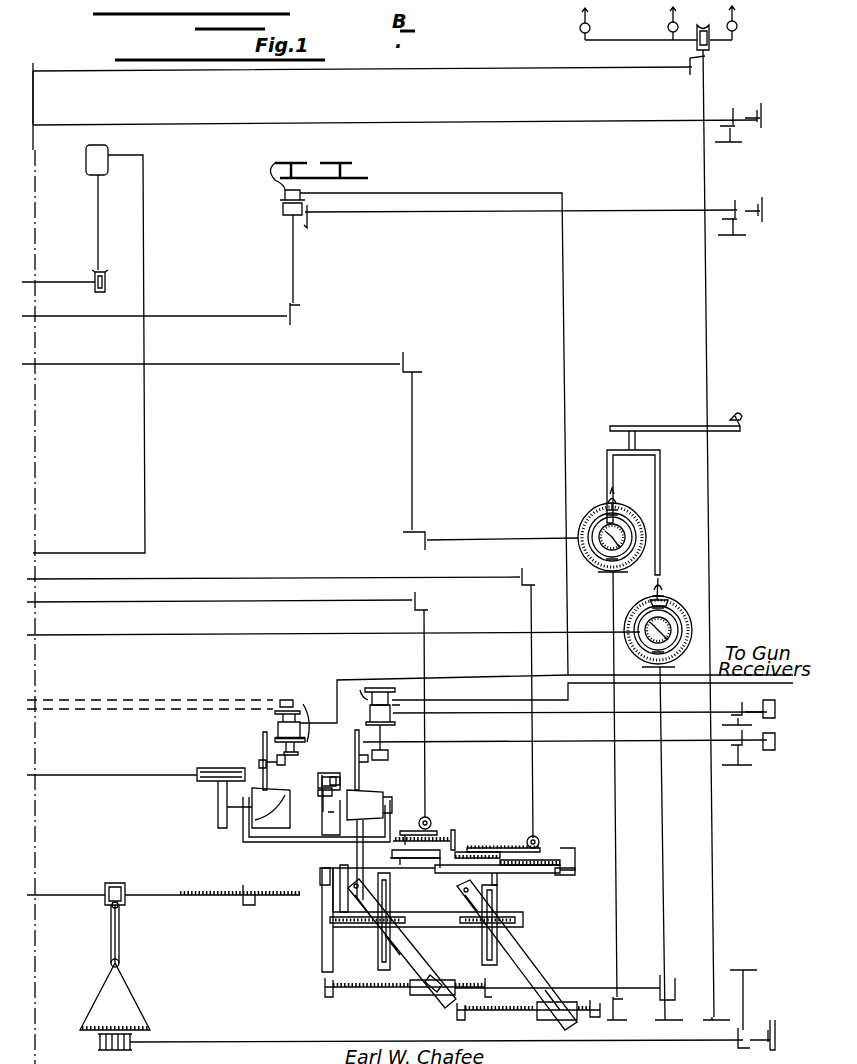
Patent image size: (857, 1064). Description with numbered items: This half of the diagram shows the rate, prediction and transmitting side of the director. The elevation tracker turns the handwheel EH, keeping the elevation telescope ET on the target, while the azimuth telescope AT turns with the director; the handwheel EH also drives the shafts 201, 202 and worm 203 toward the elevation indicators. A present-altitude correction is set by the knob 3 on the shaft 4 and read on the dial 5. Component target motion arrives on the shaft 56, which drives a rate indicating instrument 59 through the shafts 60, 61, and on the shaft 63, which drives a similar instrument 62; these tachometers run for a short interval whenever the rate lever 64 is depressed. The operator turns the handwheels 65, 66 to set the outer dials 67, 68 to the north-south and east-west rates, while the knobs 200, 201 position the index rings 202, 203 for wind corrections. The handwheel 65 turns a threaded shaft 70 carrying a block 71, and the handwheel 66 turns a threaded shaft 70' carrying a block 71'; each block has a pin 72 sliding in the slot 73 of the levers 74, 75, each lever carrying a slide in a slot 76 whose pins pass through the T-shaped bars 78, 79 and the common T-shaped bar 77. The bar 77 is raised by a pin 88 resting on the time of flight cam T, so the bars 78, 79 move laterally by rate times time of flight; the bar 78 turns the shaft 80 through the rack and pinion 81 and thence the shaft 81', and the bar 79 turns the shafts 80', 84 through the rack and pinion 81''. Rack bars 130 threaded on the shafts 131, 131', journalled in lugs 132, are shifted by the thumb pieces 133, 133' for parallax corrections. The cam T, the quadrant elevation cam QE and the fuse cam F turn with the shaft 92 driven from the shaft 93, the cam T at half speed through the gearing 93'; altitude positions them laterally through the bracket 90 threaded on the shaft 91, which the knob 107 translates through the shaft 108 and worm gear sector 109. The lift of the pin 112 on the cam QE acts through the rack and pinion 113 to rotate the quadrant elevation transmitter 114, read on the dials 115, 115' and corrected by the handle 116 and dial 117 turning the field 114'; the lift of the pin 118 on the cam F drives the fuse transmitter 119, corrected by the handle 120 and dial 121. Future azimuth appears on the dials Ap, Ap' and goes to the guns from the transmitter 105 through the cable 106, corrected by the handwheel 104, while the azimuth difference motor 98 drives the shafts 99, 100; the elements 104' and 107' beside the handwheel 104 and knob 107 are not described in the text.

The knob 3 is at (764, 112).
The shaft 4 is at (563, 124).
The dial 5 is at (742, 143).
The shaft 56 is at (224, 367).
The rate indicating instrument 59 is at (602, 520).
The shaft 60 is at (411, 437).
The shaft 61 is at (493, 537).
The rate indicating instrument 62 is at (645, 616).
The shaft 63 is at (137, 633).
The rate lever 64 is at (737, 413).
The handwheel 65 is at (622, 1016).
The handwheel 66 is at (668, 1016).
The outer dial 67 is at (626, 512).
The outer dial 68 is at (674, 656).
The threaded shaft 70 is at (534, 1019).
The threaded shaft 70' is at (565, 977).
The block 71 is at (524, 1028).
The block 71' is at (408, 1004).
The pin 72 is at (428, 996).
The slot 73 is at (444, 986).
The lever 74 is at (530, 970).
The lever 75 is at (412, 940).
The slot 76 is at (380, 934).
The common T-shaped bar 77 is at (322, 930).
The T-shaped bar 78 is at (390, 878).
The T-shaped bar 79 is at (570, 870).
The shaft 80 is at (443, 761).
The shaft 80' is at (553, 761).
The rack and pinion 81 is at (460, 822).
The shaft 81' is at (227, 704).
The rack and pinion connection 81'' is at (561, 812).
The shaft 84 is at (334, 577).
The pin 88 is at (337, 888).
The supporting bracket 90 is at (262, 848).
The shaft 91 is at (173, 894).
The shaft 92 is at (317, 806).
The shaft 93 is at (139, 785).
The gearing 93' is at (333, 782).
The azimuth difference motor 98 is at (86, 157).
The shaft 99 is at (100, 226).
The shaft 100 is at (49, 278).
The handwheel 104 is at (543, 194).
The switch 104' is at (741, 246).
The future azimuth transmitter 105 is at (285, 217).
The cable 106 is at (567, 303).
The knob 107 is at (775, 1025).
The switch 107' is at (762, 995).
The shaft 108 is at (250, 1040).
The worm gear sector 109 is at (134, 1000).
The pin 112 is at (263, 731).
The rack and pinion 113 is at (258, 762).
The quadrant elevation transmitter 114 is at (315, 712).
The rotatably mounted field 114' is at (312, 735).
The coarse quadrant elevation dial 115 is at (274, 713).
The fine quadrant elevation dial 115' is at (397, 676).
The handle 116 is at (772, 752).
The dial 117 is at (733, 772).
The pin 118 is at (356, 730).
The fuse transmitter 119 is at (386, 730).
The handle 120 is at (771, 709).
The dial 121 is at (720, 727).
The rack bar 130 is at (519, 824).
The threaded shaft 131 is at (508, 884).
The threaded shaft 131' is at (400, 877).
The lug 132 is at (462, 850).
The thumb piece 133 is at (589, 841).
The thumb piece 133' is at (503, 817).
The setting knob 200 is at (614, 490).
The setting knob 201 is at (710, 320).
The index ring 202 is at (458, 70).
The index ring 203 is at (672, 608).
The elevation telescope ET is at (601, 24).
The azimuth telescope AT is at (748, 23).
The coarse future azimuth dial Ap is at (320, 165).
The fine future azimuth dial Ap' is at (340, 159).
The quadrant elevation cam QE is at (268, 807).
The fuse cam F is at (368, 796).
The time of flight cam T is at (370, 860).
The elevation handwheel EH is at (725, 1007).